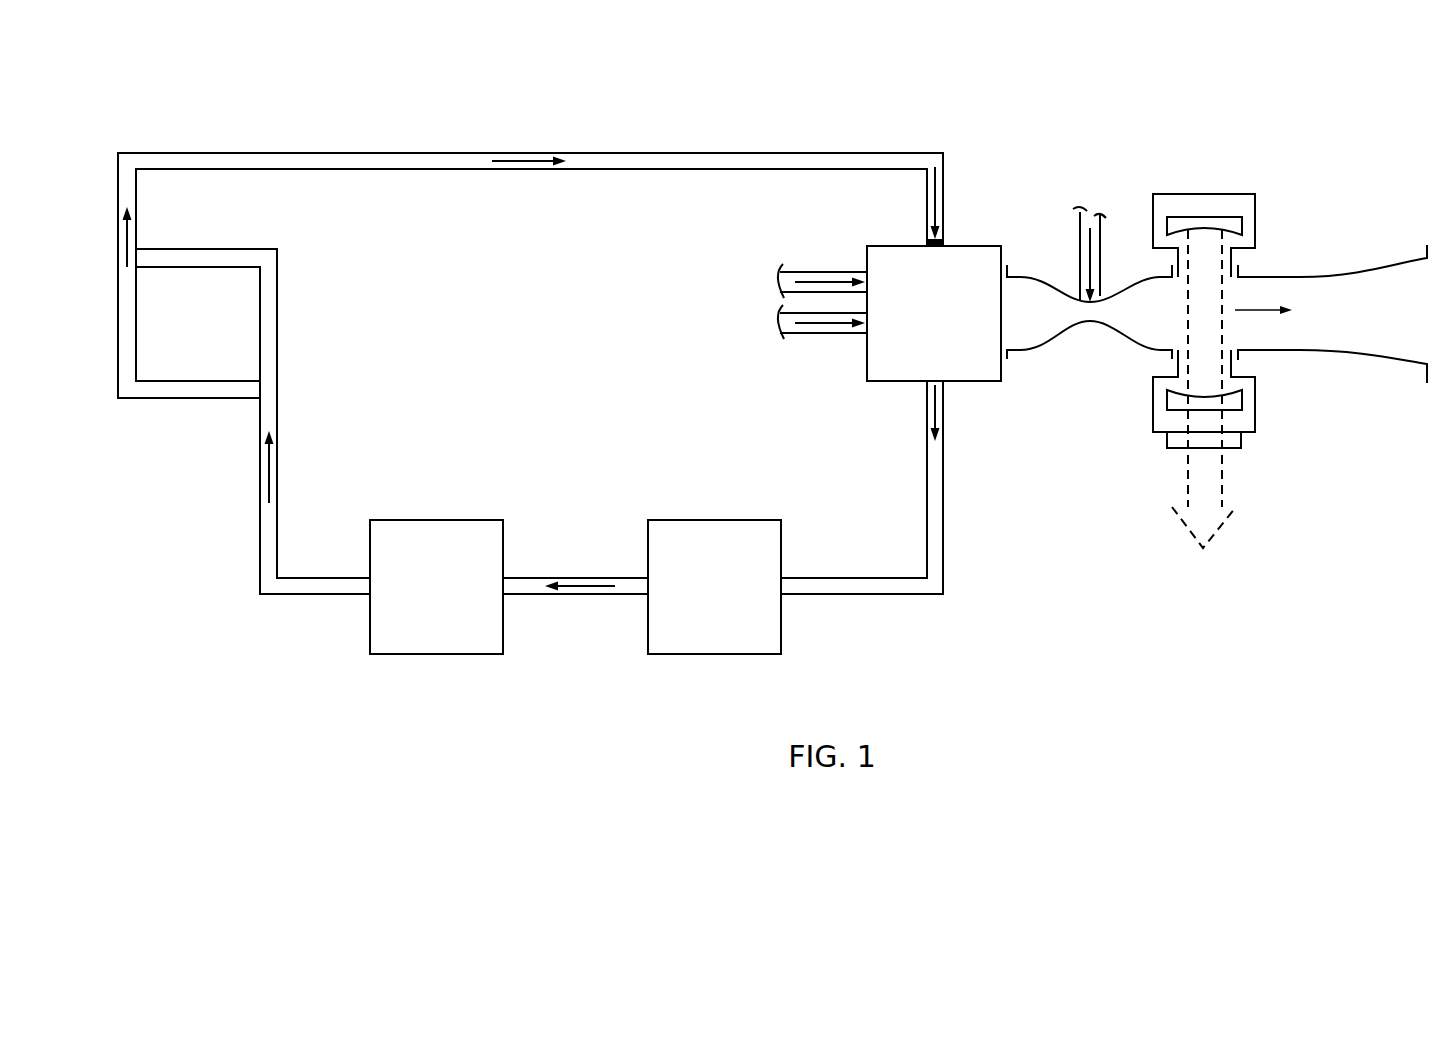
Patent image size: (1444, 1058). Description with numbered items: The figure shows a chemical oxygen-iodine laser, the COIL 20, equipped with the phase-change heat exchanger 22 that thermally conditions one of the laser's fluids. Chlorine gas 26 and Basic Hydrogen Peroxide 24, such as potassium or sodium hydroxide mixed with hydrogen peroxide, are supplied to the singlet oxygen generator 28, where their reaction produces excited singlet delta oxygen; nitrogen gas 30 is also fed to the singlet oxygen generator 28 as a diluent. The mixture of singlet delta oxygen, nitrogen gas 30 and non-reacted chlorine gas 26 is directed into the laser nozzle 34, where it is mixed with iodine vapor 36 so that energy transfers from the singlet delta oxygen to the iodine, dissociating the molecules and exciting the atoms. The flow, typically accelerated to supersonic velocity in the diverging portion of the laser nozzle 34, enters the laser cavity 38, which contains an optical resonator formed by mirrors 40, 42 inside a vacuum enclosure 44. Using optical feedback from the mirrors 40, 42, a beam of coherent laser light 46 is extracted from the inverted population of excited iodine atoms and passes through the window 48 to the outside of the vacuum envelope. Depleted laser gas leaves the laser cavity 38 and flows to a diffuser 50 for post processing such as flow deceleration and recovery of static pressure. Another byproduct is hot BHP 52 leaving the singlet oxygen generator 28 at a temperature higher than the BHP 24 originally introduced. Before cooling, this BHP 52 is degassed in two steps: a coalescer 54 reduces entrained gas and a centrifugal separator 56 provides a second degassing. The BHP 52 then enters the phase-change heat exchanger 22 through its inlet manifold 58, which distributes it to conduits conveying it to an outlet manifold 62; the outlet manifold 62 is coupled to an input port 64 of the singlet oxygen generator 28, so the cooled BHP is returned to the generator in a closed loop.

The COIL 20 is at (502, 723).
The phase-change heat exchanger 22 is at (183, 339).
The Basic Hydrogen Peroxide 24 is at (945, 190).
The chlorine gas 26 is at (814, 280).
The singlet oxygen generator 28 is at (920, 330).
The nitrogen gas 30 is at (812, 326).
The laser nozzle 34 is at (1090, 323).
The iodine vapor 36 is at (1080, 244).
The laser cavity 38 is at (1190, 321).
The mirror 40 is at (1240, 223).
The mirror 42 is at (1242, 405).
The vacuum enclosure 44 is at (1170, 198).
The coherent laser light 46 is at (1190, 482).
The window 48 is at (1242, 445).
The diffuser 50 is at (1310, 321).
The BHP 52 is at (945, 422).
The coalescer 54 is at (700, 600).
The centrifugal separator 56 is at (422, 600).
The inlet manifold 58 is at (216, 259).
The outlet manifold 62 is at (180, 391).
The input port 64 is at (926, 241).